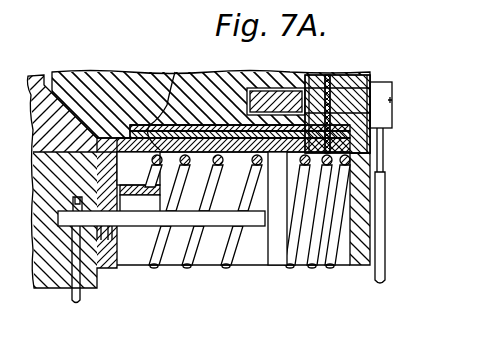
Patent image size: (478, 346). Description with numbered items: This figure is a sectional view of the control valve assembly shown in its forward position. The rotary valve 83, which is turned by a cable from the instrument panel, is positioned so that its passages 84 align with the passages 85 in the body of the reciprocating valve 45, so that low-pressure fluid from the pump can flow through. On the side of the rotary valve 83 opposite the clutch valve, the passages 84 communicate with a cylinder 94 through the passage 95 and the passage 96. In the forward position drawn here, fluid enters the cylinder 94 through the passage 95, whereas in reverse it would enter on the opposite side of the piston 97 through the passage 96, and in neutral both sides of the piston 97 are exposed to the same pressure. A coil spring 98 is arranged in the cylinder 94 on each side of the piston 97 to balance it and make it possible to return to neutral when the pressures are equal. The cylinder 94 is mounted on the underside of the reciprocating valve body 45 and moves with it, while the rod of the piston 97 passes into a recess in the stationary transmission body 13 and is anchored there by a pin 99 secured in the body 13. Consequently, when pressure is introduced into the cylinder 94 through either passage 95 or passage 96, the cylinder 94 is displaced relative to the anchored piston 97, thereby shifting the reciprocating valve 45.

The body 13 is at (58, 290).
The reciprocating valve 45 is at (97, 72).
The passage 95 is at (175, 72).
The passages 85 is at (330, 80).
The passages 84 is at (343, 83).
The rotary valve 83 is at (392, 100).
The passage 96 is at (368, 135).
The cylinder 94 is at (125, 268).
The coil spring 98 is at (192, 265).
The piston 97 is at (278, 257).
The pin 99 is at (82, 298).